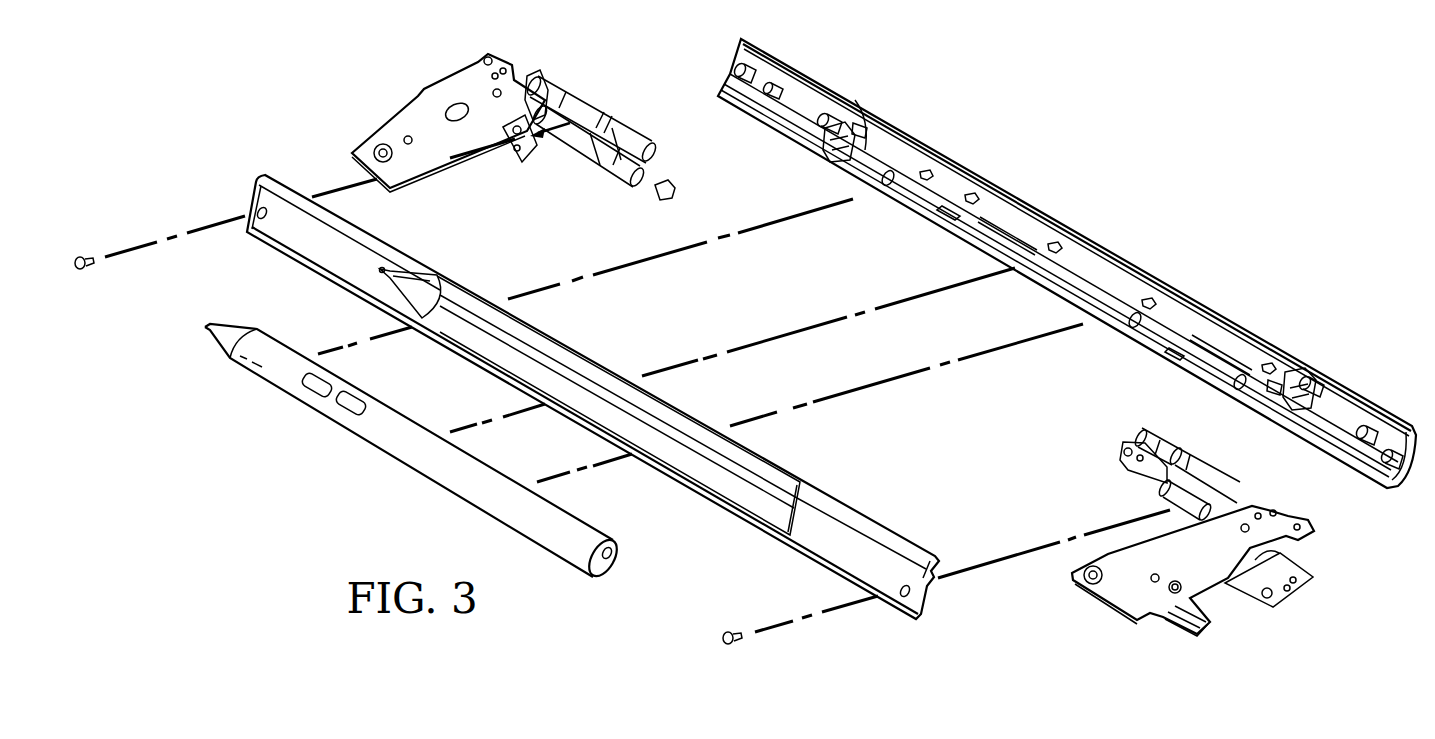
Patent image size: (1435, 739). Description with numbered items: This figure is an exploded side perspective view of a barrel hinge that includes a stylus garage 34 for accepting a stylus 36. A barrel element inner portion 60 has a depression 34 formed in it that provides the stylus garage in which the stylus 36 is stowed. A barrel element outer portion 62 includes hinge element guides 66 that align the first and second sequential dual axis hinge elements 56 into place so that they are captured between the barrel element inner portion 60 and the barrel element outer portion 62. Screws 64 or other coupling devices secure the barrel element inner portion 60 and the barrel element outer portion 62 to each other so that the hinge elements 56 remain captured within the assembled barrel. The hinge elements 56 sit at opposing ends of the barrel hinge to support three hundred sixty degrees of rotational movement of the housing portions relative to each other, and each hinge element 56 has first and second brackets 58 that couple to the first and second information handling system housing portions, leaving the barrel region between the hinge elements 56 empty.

The stylus garage 34 is at (620, 386).
The stylus 36 is at (413, 474).
The sequential dual axis hinge element 56 is at (428, 96).
The bracket 58 is at (1203, 632).
The barrel element inner portion 60 is at (700, 415).
The barrel element outer portion 62 is at (1092, 236).
The screw 64 is at (79, 272).
The hinge element guide 66 is at (838, 108).